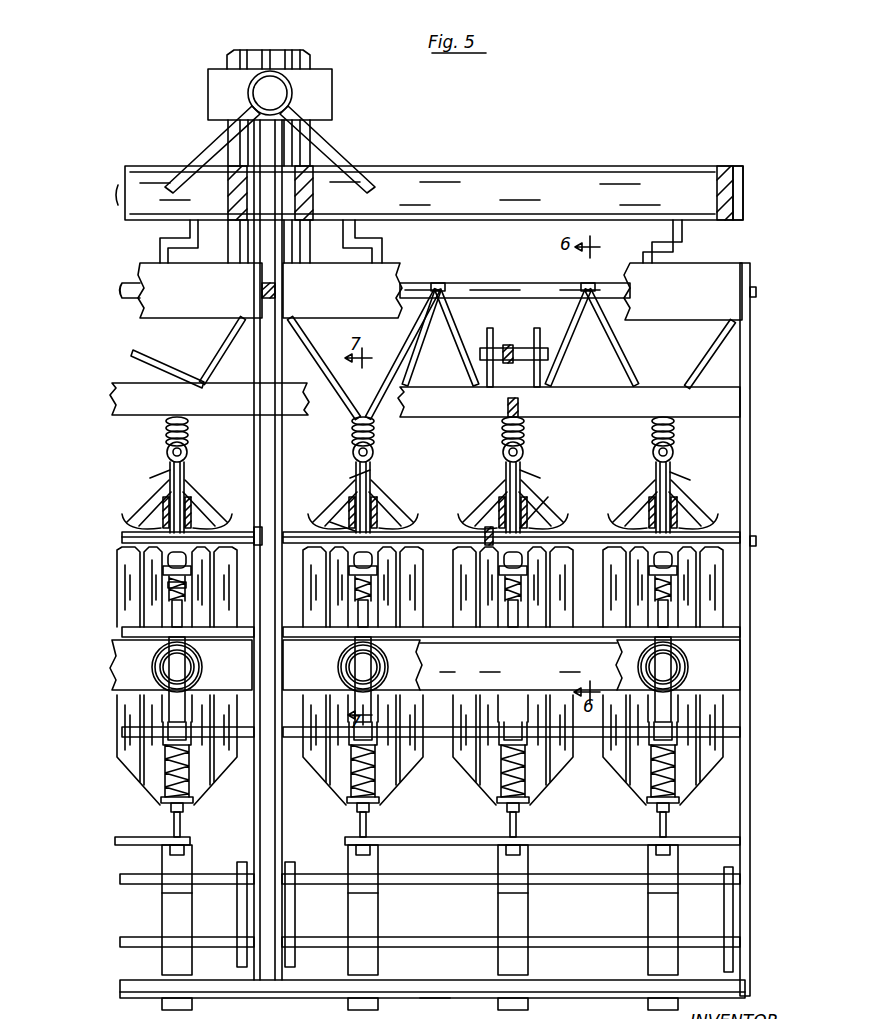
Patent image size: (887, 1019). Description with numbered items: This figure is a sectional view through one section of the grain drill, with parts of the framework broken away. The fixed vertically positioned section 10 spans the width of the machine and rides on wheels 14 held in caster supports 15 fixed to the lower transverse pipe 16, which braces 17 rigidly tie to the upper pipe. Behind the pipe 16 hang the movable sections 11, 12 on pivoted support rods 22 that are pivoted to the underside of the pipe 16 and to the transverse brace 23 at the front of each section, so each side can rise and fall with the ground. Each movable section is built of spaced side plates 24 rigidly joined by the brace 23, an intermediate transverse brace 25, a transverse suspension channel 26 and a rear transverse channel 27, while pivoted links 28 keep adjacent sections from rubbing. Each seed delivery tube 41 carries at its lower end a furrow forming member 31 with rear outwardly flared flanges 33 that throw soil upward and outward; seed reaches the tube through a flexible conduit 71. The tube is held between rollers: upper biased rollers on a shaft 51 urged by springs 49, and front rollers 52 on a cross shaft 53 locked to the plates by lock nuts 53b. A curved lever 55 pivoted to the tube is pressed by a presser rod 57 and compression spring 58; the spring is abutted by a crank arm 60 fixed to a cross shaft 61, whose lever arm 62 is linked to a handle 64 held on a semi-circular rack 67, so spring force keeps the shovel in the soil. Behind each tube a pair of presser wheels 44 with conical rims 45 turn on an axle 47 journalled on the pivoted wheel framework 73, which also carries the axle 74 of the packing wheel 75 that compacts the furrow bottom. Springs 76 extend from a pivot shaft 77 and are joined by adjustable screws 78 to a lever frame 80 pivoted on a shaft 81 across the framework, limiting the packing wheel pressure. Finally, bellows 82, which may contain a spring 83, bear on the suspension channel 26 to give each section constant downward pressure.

The vertically positioned section 10 is at (567, 163).
The movable section 11 is at (741, 258).
The movable section 12 is at (135, 255).
The wheel 14 is at (300, 64).
The caster support 15 is at (292, 93).
The lower transverse pipe 16 is at (652, 170).
The brace 17 is at (722, 166).
The pivoted support rod 22 is at (186, 240).
The transverse brace 23 is at (212, 299).
The side plate 24 is at (750, 355).
The intermediate transverse brace 25 is at (228, 409).
The transverse suspension channel 26 is at (244, 676).
The rear transverse channel 27 is at (234, 982).
The pivoted link 28 is at (436, 998).
The furrow forming member 31 is at (162, 482).
The rear outwardly flared flange 33 is at (145, 505).
The seed delivery tube 41 is at (372, 566).
The presser wheel 44 is at (150, 792).
The conical peripheral rim 45 is at (158, 812).
The axle 47 is at (433, 668).
The spring 49 is at (187, 590).
The shaft 51 is at (168, 586).
The adjustably positioned roller 52 is at (340, 526).
The cross shaft 53 is at (438, 546).
The lock nut 53b is at (256, 530).
The curved lever 55 is at (150, 366).
The presser rod 57 is at (188, 450).
The compression spring 58 is at (190, 428).
The crank arm 60 is at (185, 480).
The cross shaft 61 is at (125, 535).
The lever arm 62 is at (535, 518).
The handle 64 is at (508, 347).
The semi-circular rack 67 is at (520, 406).
The conduit 71 is at (187, 564).
The wheel framework 73 is at (237, 908).
The axle 74 is at (135, 947).
The packing wheel 75 is at (192, 964).
The spring 76 is at (190, 762).
The pivot shaft 77 is at (232, 770).
The adjustable screw 78 is at (150, 838).
The lever frame 80 is at (130, 846).
The shaft 81 is at (220, 876).
The bellows 82 is at (152, 664).
The spring 83 is at (198, 662).